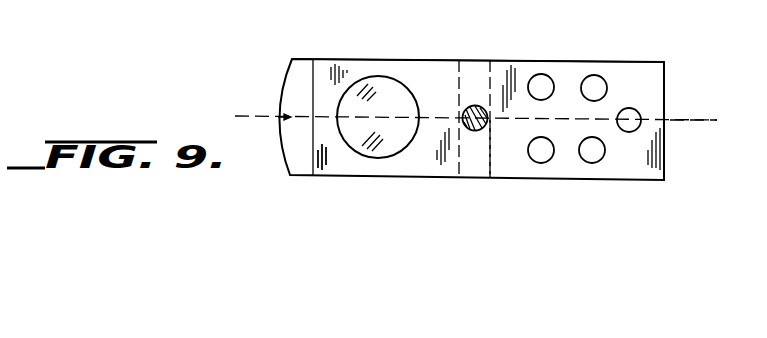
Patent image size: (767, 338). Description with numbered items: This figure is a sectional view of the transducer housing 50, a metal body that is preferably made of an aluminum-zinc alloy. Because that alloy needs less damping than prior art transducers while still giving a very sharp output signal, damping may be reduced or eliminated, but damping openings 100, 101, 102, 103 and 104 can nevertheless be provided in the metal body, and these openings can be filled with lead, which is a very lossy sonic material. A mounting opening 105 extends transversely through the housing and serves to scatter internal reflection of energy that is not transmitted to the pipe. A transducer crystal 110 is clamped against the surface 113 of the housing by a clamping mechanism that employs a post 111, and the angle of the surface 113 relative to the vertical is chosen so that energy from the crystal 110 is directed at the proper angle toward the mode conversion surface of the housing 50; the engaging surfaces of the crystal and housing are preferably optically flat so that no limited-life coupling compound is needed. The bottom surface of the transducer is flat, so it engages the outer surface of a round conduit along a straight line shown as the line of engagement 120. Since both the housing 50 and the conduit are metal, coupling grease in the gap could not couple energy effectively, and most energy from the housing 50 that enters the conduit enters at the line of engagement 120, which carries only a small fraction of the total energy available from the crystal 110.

The transducer housing 50 is at (277, 88).
The transducer crystal 110 is at (378, 76).
The post 111 is at (470, 106).
The damping opening 101 is at (541, 76).
The damping opening 103 is at (597, 82).
The damping opening 104 is at (634, 114).
The damping opening 100 is at (543, 161).
The damping opening 102 is at (595, 161).
The mounting opening 105 is at (487, 172).
The surface 113 is at (331, 166).
The line of engagement 120 is at (685, 122).